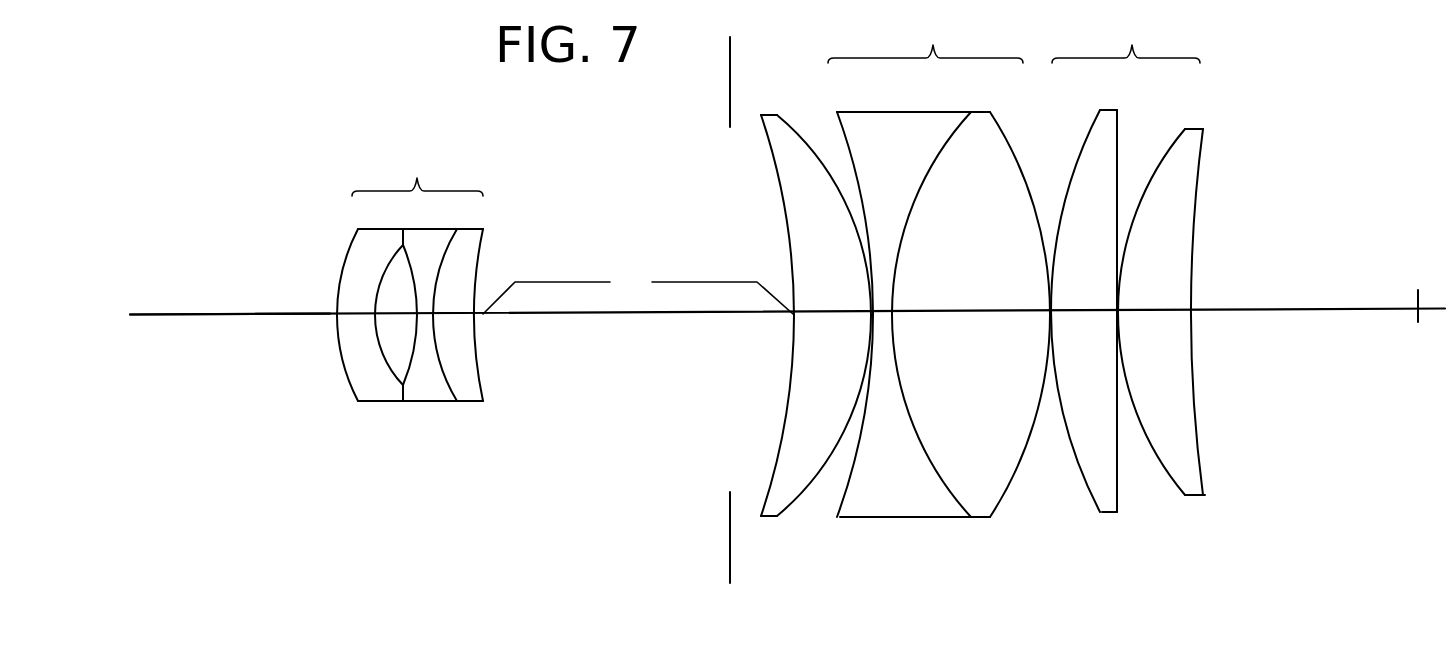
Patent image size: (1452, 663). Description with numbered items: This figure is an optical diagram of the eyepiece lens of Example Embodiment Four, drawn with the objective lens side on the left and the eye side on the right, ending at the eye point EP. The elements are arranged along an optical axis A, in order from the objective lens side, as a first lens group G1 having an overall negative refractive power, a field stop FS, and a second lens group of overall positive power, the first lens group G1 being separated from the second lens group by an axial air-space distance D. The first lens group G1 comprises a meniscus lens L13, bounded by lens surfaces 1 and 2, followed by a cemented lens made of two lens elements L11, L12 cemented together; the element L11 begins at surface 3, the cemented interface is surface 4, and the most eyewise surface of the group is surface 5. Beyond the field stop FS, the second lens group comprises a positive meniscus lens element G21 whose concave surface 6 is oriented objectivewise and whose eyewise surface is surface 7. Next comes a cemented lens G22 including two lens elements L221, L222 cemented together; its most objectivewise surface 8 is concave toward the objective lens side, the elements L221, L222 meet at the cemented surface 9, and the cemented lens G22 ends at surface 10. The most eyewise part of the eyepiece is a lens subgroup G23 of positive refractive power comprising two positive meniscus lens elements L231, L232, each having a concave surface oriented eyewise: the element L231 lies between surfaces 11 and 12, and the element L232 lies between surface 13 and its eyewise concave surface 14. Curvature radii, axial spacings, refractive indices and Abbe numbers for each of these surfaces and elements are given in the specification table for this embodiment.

The lens surface 1 is at (338, 337).
The lens surface 2 is at (380, 355).
The lens surface 3 is at (408, 362).
The lens surface 4 is at (445, 383).
The lens surface 5 is at (480, 367).
The concave surface R21a 6 is at (783, 427).
The lens surface 7 is at (793, 502).
The concave surface R22a 8 is at (840, 488).
The lens surface 9 is at (942, 483).
The lens surface 10 is at (1013, 477).
The lens surface 11 is at (1080, 472).
The lens surface 12 is at (1120, 473).
The lens surface 13 is at (1175, 482).
The concave surface R232b 14 is at (1170, 382).
The lens element L11 is at (432, 387).
The lens element L12 is at (478, 393).
The meniscus lens L13 is at (367, 393).
The lens element L221 is at (863, 507).
The lens element L222 is at (982, 507).
The positive meniscus lens element L231 is at (1107, 508).
The positive meniscus lens element L232 is at (1192, 488).
The first lens group G1 is at (417, 167).
The positive meniscus lens element G21 is at (767, 115).
The cemented lens G22 is at (925, 31).
The lens subgroup G23 is at (1126, 31).
The optical axis A is at (198, 313).
The axial air-space distance D is at (638, 289).
The field stop FS is at (730, 543).
The eye point EP is at (1419, 288).